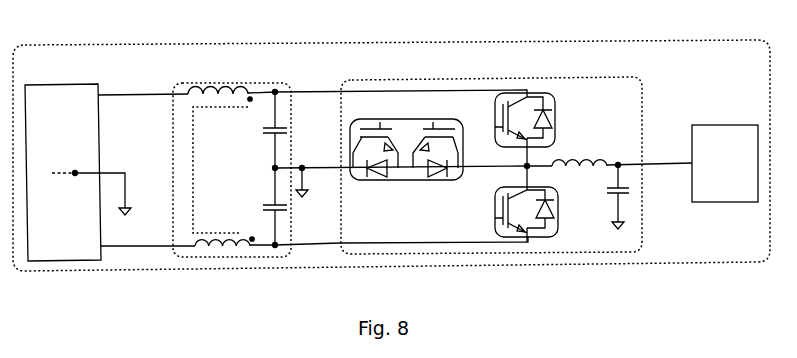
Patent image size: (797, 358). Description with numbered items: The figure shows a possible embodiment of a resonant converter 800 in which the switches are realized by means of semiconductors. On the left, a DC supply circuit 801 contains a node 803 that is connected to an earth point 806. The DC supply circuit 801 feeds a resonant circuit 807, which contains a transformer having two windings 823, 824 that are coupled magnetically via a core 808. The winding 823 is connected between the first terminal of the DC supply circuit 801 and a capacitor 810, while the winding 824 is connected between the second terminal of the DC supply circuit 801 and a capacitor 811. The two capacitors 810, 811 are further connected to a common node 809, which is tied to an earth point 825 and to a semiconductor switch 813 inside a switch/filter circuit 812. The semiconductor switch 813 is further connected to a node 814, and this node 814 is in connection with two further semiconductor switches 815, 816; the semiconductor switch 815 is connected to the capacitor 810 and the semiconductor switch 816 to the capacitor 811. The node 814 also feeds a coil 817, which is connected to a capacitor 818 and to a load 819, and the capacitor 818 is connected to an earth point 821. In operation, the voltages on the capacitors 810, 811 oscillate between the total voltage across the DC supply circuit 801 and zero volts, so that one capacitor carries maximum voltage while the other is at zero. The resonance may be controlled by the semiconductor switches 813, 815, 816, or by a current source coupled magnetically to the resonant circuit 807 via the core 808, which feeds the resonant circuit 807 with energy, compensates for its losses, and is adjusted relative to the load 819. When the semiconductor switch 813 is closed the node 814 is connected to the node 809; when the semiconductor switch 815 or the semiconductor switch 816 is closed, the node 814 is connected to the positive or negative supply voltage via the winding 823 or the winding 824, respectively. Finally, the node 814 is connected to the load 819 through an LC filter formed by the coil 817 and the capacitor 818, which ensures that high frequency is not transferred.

The resonant converter 800 is at (360, 33).
The DC supply circuit 801 is at (55, 76).
The node 803 is at (75, 173).
The earth point 806 is at (125, 215).
The resonant circuit 807 is at (233, 76).
The core 808 is at (215, 159).
The node 809 is at (275, 170).
The capacitor 810 is at (265, 130).
The capacitor 811 is at (267, 208).
The switch/filter circuit 812 is at (552, 68).
The semiconductor switch 813 is at (410, 180).
The node 814 is at (525, 168).
The semiconductor switch 815 is at (557, 118).
The semiconductor switch 816 is at (558, 212).
The coil 817 is at (578, 160).
The capacitor 818 is at (609, 194).
The load 819 is at (728, 116).
The earth point 821 is at (618, 229).
The winding 823 is at (210, 99).
The winding 824 is at (225, 240).
The earth point 825 is at (302, 197).